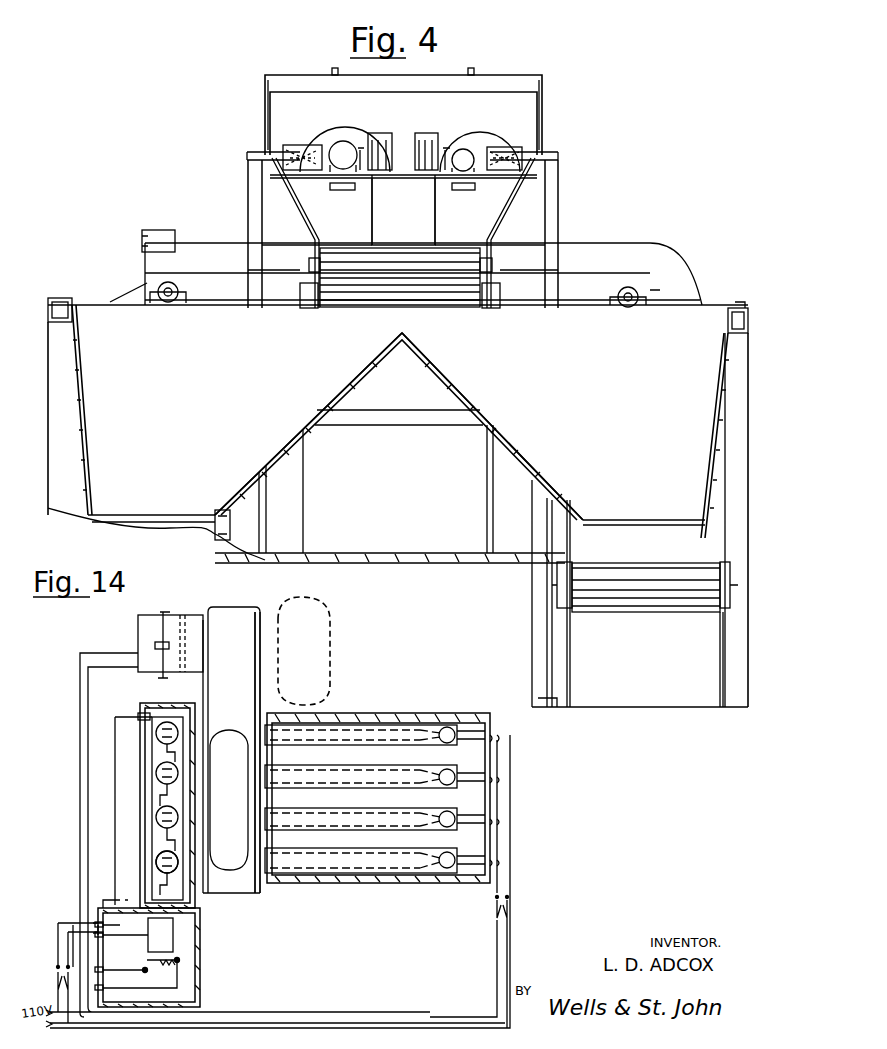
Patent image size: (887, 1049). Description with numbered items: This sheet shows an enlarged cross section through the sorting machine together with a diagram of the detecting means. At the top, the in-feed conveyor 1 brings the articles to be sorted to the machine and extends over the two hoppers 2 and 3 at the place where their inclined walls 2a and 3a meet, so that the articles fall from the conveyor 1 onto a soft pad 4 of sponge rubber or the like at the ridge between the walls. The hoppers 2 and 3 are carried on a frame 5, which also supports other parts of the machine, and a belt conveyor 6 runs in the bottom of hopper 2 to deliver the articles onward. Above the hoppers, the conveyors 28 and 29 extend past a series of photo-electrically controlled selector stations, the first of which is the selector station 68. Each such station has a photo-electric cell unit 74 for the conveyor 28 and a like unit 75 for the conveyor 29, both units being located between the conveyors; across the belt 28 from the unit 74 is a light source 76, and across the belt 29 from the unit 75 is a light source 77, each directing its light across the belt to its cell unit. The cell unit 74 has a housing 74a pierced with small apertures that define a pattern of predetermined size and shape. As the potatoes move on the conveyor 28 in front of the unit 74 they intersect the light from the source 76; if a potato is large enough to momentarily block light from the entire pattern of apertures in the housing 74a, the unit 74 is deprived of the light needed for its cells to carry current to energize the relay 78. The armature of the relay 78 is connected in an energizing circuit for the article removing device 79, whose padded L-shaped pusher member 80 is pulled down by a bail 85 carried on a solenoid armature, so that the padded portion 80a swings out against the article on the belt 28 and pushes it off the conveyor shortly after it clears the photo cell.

In FIG. 4, the in-feed conveyor 1 is at (362, 247).
In FIG. 4, the hopper 2 is at (718, 450).
In FIG. 4, the inclined wall 2a is at (512, 444).
In FIG. 4, the hopper 3 is at (78, 430).
In FIG. 4, the inclined wall 3a is at (285, 445).
In FIG. 4, the soft pad 4 is at (358, 352).
In FIG. 4, the frame 5 is at (748, 360).
In FIG. 4, the belt conveyor 6 is at (645, 612).
In FIG. 4, the conveyor 28 is at (466, 190).
In FIG. 14, the conveyor 28 is at (247, 895).
In FIG. 4, the conveyor 29 is at (345, 190).
In FIG. 4, the selector station 68 is at (400, 184).
In FIG. 4, the photo-electric cell unit 74 is at (426, 140).
In FIG. 14, the photo-electric cell unit 74 is at (155, 788).
In FIG. 14, the housing 74a is at (150, 706).
In FIG. 4, the photo-electric cell unit 75 is at (377, 140).
In FIG. 4, the light source 76 is at (500, 148).
In FIG. 14, the light source 76 is at (352, 713).
In FIG. 4, the light source 77 is at (298, 146).
In FIG. 14, the light source 77 is at (170, 876).
In FIG. 14, the relay 78 is at (173, 936).
In FIG. 14, the article removing device 79 is at (189, 613).
In FIG. 14, the pusher member 80 is at (138, 634).
In FIG. 14, the padded portion 80a is at (208, 636).
In FIG. 14, the bail 85 is at (160, 622).